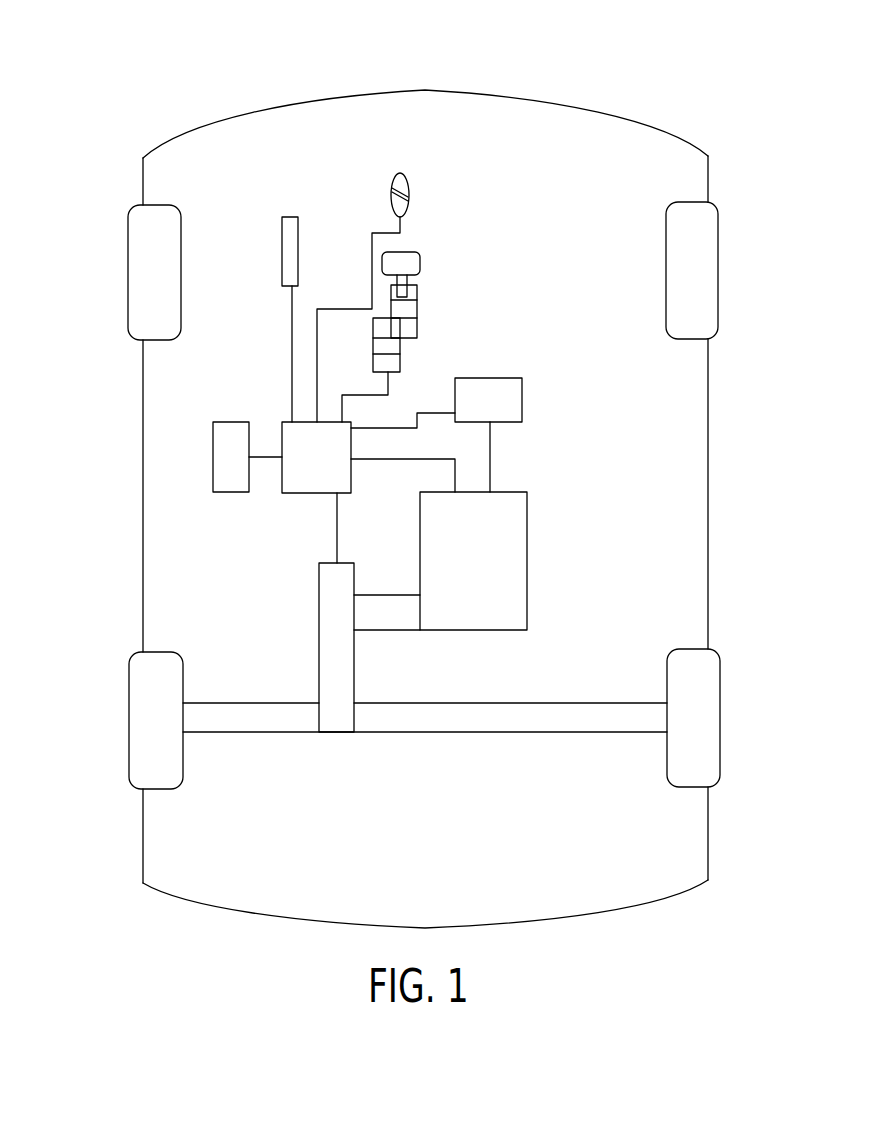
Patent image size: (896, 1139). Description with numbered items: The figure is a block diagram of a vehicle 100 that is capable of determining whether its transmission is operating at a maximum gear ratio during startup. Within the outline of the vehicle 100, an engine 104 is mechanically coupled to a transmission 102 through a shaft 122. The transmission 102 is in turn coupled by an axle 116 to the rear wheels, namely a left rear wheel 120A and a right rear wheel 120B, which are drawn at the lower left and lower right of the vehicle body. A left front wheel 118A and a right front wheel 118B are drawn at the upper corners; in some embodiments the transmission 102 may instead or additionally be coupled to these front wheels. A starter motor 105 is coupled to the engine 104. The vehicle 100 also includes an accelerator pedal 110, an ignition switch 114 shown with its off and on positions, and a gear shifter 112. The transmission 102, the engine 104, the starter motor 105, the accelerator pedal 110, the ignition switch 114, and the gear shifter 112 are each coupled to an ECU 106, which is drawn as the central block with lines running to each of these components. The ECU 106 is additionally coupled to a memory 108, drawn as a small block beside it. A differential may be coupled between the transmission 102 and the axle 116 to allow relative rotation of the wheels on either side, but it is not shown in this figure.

The vehicle 100 is at (76, 80).
The transmission 102 is at (328, 622).
The engine 104 is at (515, 538).
The starter motor 105 is at (522, 393).
The ECU 106 is at (298, 493).
The memory 108 is at (232, 422).
The accelerator pedal 110 is at (298, 245).
The gear shifter 112 is at (417, 315).
The ignition switch 114 is at (405, 177).
The axle 116 is at (405, 732).
The left front wheel 118A is at (128, 265).
The right front wheel 118B is at (718, 260).
The left rear wheel 120A is at (129, 727).
The right rear wheel 120B is at (720, 715).
The shaft 122 is at (385, 620).